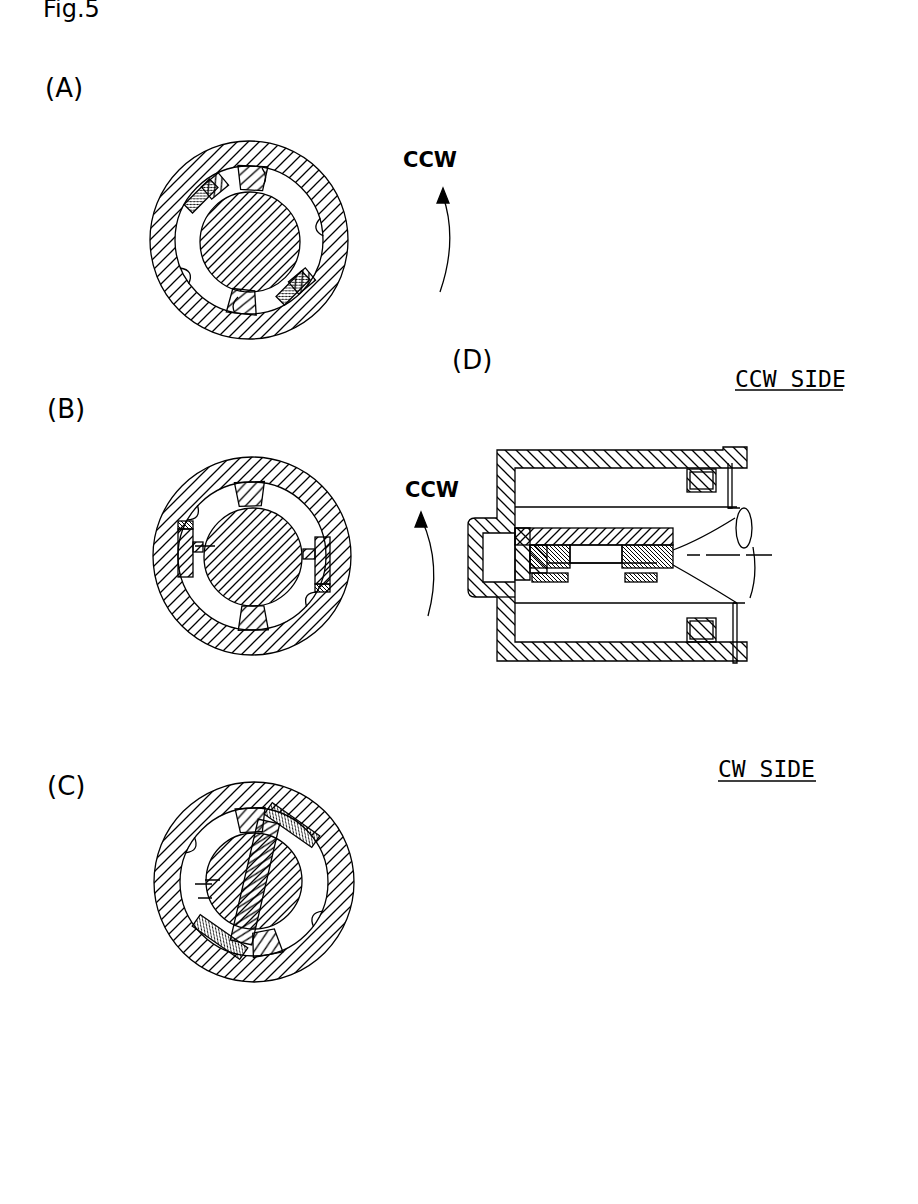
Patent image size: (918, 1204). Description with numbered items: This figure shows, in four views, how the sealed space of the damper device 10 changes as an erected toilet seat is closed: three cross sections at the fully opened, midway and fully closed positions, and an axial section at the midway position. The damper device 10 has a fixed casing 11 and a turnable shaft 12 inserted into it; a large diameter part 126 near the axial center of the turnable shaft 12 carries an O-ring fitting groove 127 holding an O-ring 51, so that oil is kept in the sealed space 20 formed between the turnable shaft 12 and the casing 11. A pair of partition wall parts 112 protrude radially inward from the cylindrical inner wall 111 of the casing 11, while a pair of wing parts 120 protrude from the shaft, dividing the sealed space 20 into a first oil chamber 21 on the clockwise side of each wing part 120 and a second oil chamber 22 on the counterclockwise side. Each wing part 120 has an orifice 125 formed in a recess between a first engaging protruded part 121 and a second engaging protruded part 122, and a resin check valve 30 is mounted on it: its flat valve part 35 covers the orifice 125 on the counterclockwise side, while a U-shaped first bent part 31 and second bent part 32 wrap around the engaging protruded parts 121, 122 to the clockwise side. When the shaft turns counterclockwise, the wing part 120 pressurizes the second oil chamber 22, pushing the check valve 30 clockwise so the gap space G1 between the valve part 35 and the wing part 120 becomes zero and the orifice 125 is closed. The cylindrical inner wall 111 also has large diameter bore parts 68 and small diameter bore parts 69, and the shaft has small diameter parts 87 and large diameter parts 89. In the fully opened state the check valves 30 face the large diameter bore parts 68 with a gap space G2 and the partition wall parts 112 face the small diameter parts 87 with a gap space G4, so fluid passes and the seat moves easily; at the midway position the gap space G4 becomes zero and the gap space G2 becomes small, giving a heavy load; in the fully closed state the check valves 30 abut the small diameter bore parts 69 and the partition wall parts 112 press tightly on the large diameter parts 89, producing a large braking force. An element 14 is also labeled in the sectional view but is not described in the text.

The damper device 10 is at (683, 403).
The casing 11 is at (313, 183).
The turnable shaft 12 is at (290, 882).
The bearing portion 14 is at (718, 478).
The sealed space 20 is at (538, 478).
The first oil chamber 21 is at (232, 172).
The second oil chamber 22 is at (303, 207).
The check valve 30 is at (215, 172).
The first bent part 31 is at (716, 628).
The second bent part 32 is at (517, 615).
The valve part 35 is at (612, 520).
The O-ring 51 is at (736, 462).
The large diameter bore part 68 is at (188, 188).
The small diameter bore part 69 is at (293, 170).
The small diameter part 87 is at (210, 505).
The large diameter part 89 is at (320, 505).
The cylindrical inner wall 111 is at (178, 246).
The partition wall part 112 is at (250, 165).
The wing part 120 is at (318, 580).
The first engaging protruded part 121 is at (750, 516).
The second engaging protruded part 122 is at (540, 572).
The orifice 125 is at (600, 550).
The large diameter part 126 is at (705, 488).
The O-ring fitting groove 127 is at (732, 475).
The gap space G1 is at (313, 253).
The gap space G2 is at (180, 203).
The gap space G4 is at (272, 160).